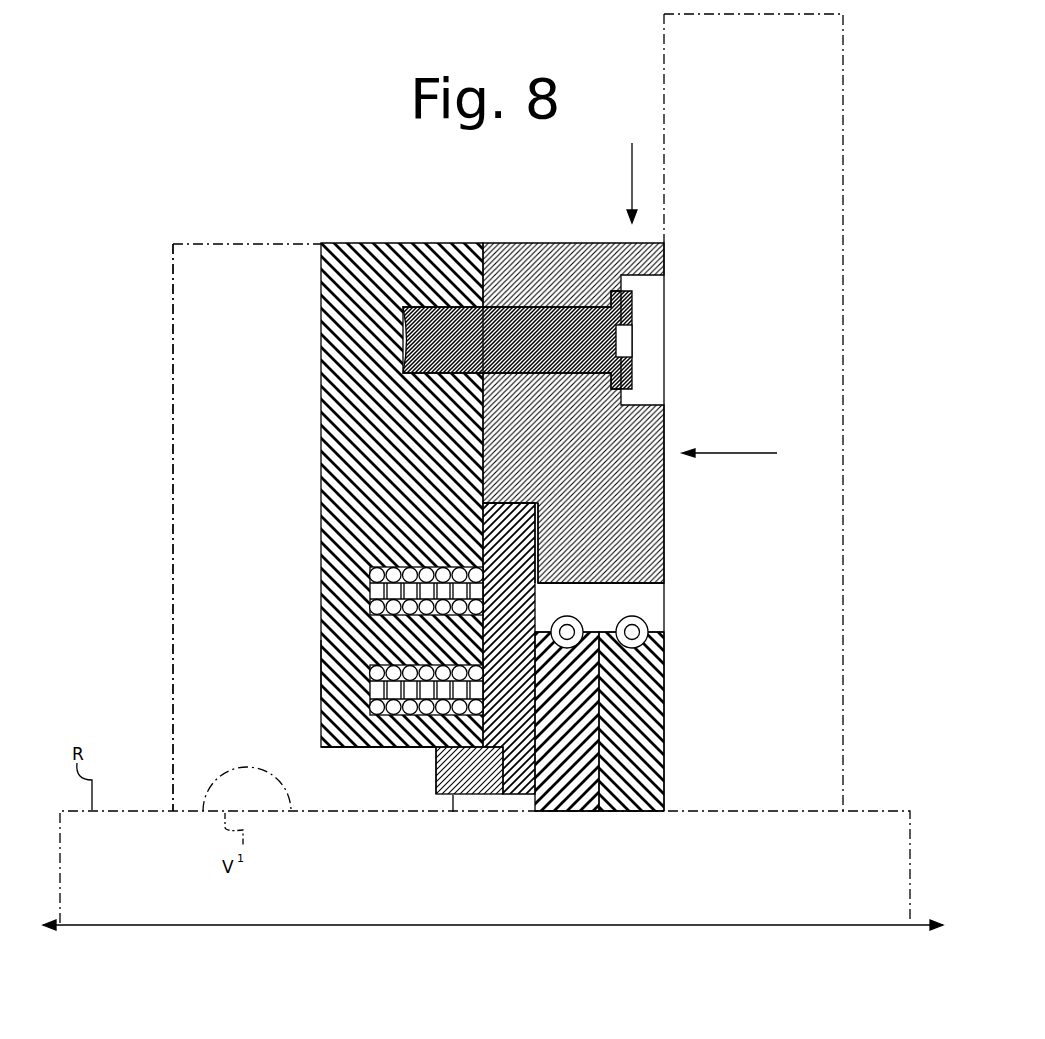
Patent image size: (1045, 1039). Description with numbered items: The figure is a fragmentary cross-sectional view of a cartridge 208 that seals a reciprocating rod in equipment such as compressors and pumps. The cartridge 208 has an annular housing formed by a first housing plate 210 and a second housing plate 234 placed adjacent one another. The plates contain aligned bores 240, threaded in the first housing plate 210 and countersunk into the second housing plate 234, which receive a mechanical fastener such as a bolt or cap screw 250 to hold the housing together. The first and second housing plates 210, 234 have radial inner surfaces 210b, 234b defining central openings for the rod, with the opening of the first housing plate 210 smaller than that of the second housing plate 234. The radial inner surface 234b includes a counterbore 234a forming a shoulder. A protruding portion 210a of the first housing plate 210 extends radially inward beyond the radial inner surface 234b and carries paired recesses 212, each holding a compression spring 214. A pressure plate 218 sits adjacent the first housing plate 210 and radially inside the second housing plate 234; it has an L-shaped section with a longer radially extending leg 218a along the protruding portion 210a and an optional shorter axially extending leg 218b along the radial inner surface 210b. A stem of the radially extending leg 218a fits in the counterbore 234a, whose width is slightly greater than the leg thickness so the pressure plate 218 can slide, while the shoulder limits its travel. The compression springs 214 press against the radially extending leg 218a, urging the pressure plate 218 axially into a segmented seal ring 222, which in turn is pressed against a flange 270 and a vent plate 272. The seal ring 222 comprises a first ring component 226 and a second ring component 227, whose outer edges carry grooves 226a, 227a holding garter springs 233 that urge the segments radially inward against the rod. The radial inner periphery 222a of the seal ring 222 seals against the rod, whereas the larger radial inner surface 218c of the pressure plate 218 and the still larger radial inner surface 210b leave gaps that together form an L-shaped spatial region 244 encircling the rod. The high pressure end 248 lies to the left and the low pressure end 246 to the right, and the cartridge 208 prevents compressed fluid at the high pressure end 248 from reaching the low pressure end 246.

The cartridge 208 is at (628, 172).
The first housing plate 210 is at (418, 242).
The protruding portion 210a is at (338, 667).
The radial inner surface 210b is at (340, 765).
The recesses 212 is at (402, 715).
The compression spring 214 is at (370, 580).
The pressure plate 218 is at (503, 794).
The radially extending leg 218a is at (522, 515).
The axially extending leg 218b is at (470, 794).
The radial inner surface 218c is at (453, 795).
The segmented seal ring 222 is at (663, 760).
The radial inner periphery 222a is at (534, 843).
The first ring component 226 is at (590, 748).
The groove 226a is at (567, 648).
The second ring component 227 is at (652, 715).
The groove 227a is at (630, 665).
The garter springs 233 is at (645, 620).
The second housing plate 234 is at (580, 243).
The counterbore 234a is at (535, 557).
The radial inner surface 234b is at (630, 585).
The bore 240 is at (653, 403).
The spatial region 244 is at (370, 780).
The low pressure end 246 is at (753, 457).
The high pressure end 248 is at (287, 292).
The cap screw 250 is at (632, 330).
The flange 270 is at (677, 47).
The vent plate 272 is at (242, 257).